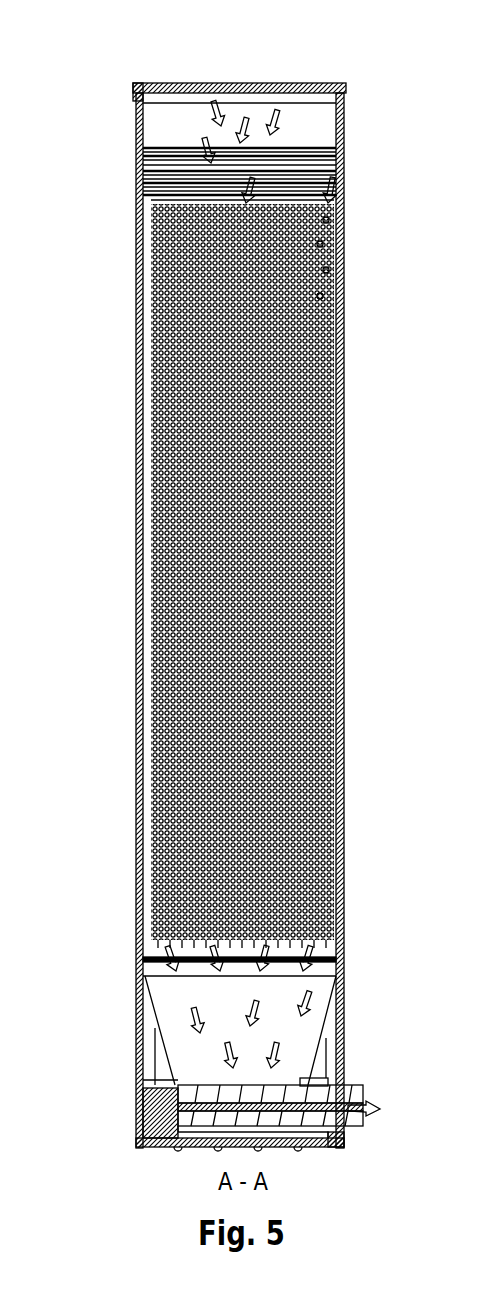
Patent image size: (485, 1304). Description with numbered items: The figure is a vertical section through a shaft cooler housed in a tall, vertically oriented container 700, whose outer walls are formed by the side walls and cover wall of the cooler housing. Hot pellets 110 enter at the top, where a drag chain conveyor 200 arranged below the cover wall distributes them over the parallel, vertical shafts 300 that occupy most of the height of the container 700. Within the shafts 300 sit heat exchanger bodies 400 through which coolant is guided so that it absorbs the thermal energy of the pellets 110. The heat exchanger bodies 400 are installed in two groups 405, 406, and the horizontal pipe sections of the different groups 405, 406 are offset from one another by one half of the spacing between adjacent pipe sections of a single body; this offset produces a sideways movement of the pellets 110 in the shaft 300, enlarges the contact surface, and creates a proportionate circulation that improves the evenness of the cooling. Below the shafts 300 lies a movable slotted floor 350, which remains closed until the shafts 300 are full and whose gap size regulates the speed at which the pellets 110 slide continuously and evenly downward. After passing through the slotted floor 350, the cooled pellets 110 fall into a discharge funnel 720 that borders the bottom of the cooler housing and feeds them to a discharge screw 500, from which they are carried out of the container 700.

The container 700 is at (128, 78).
The drag chain conveyor 200 is at (168, 156).
The shafts 300 is at (141, 208).
The heat exchanger body 400 is at (145, 302).
The first group of heat exchanger bodies 405 is at (315, 238).
The second group of heat exchanger bodies 406 is at (315, 290).
The slotted floor 350 is at (150, 951).
The discharge funnel 720 is at (160, 1008).
The discharge screw 500 is at (200, 1090).
The pellets 110 is at (376, 1124).